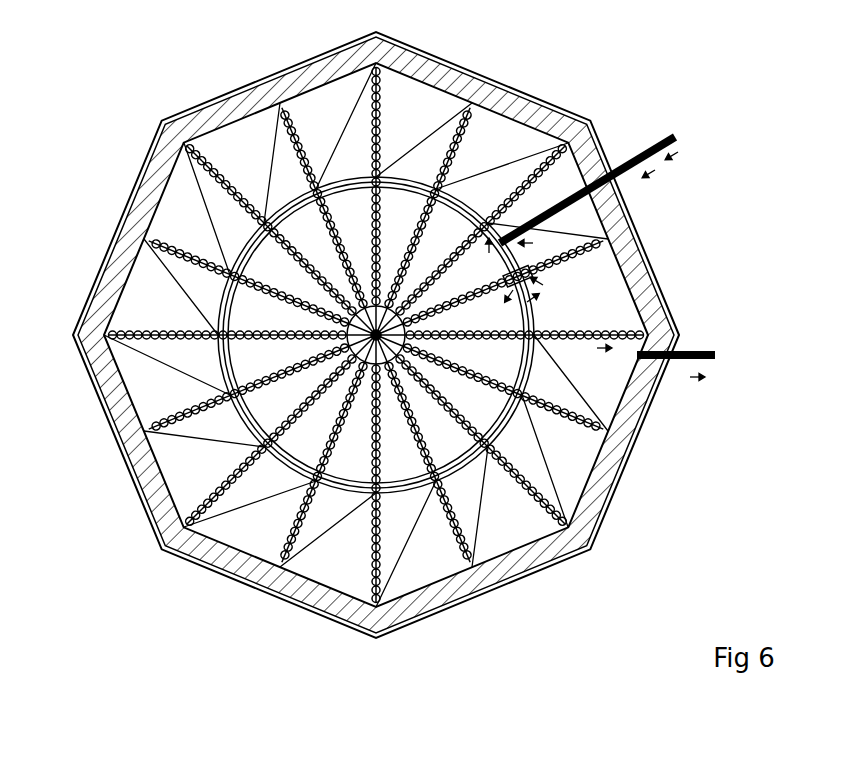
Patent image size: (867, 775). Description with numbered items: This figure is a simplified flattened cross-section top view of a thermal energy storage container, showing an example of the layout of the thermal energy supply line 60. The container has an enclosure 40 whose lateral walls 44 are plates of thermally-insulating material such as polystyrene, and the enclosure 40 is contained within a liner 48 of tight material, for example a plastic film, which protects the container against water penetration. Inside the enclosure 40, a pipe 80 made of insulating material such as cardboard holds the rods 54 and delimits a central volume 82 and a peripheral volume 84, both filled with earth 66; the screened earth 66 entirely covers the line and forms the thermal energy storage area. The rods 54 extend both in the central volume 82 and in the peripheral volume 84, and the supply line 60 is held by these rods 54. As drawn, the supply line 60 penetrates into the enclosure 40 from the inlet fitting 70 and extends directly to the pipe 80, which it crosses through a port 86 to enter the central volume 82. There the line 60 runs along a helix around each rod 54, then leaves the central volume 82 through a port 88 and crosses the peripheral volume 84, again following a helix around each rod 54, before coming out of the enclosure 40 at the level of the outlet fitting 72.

The enclosure 40 is at (662, 269).
The lateral walls 44 is at (237, 563).
The liner 48 is at (268, 78).
The rods 54 is at (471, 100).
The thermal energy supply line 60 is at (403, 560).
The earth 66 is at (343, 563).
The inlet fitting 70 is at (653, 138).
The outlet fitting 72 is at (680, 366).
The pipe 80 is at (503, 433).
The central volume 82 is at (257, 357).
The peripheral volume 84 is at (190, 472).
The port 86 is at (590, 158).
The port 88 is at (540, 292).